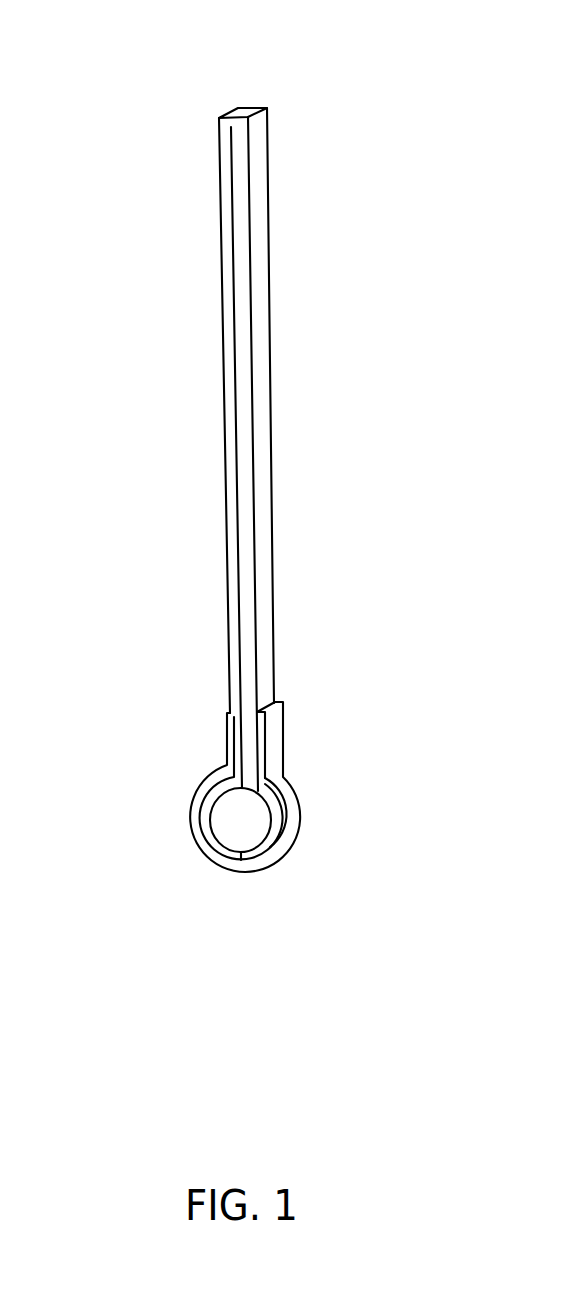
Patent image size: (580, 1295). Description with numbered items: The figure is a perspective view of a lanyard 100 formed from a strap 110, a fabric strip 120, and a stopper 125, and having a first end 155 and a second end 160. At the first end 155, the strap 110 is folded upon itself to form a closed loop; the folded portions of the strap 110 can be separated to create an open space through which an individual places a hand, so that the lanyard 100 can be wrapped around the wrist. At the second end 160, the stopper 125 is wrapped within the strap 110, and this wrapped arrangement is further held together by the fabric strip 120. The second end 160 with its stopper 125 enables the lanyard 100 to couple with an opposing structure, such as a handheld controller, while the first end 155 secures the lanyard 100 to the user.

The lanyard 100 is at (96, 75).
The strap 110 is at (262, 317).
The fabric strip 120 is at (340, 861).
The stopper 125 is at (238, 809).
The first end 155 is at (243, 97).
The second end 160 is at (252, 872).